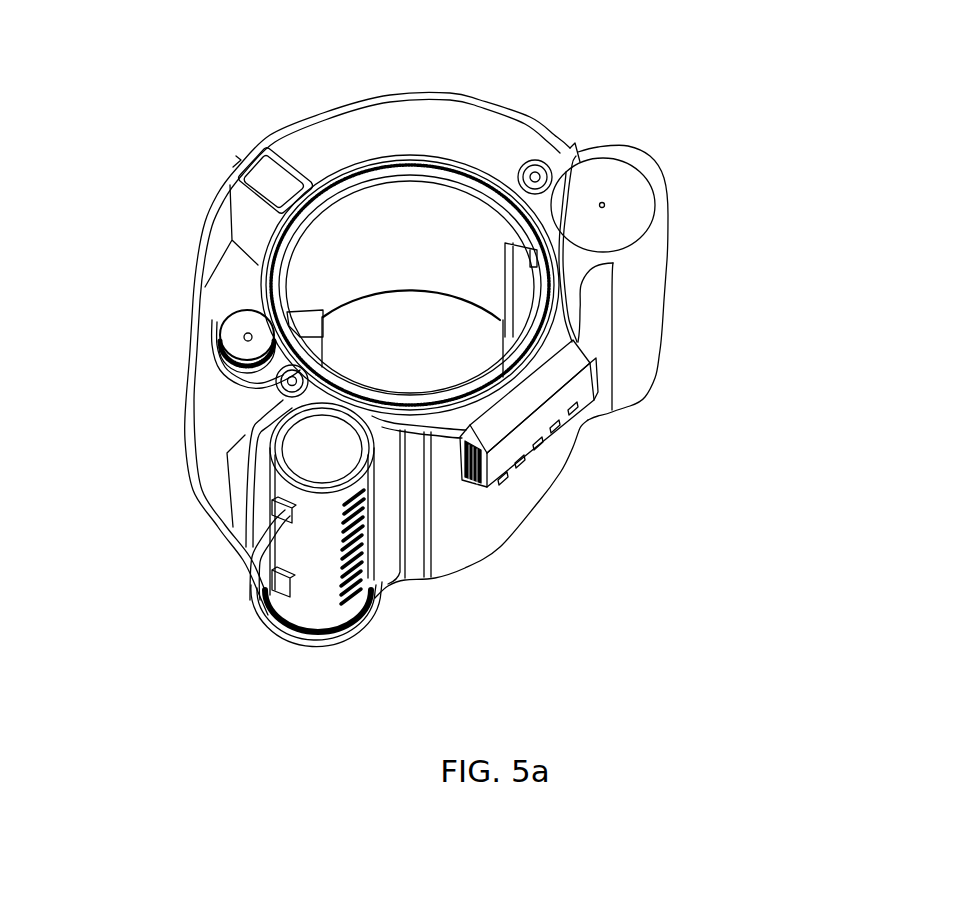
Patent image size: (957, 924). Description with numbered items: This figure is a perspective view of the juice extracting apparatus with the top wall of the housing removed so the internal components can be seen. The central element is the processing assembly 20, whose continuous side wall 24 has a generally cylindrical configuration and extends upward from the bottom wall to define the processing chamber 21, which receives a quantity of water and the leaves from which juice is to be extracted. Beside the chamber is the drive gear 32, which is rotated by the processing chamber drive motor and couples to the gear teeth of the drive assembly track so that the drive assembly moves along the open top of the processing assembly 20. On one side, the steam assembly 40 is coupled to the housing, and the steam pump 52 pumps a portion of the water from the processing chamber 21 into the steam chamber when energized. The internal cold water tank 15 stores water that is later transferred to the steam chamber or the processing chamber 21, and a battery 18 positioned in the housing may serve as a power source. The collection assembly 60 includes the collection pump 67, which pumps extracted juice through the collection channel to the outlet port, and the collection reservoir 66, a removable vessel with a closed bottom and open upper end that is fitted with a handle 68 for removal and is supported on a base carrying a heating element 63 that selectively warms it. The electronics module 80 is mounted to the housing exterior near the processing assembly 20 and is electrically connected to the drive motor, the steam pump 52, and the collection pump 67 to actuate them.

The internal cold water tank 15 is at (494, 120).
The battery 18 is at (260, 174).
The processing assembly 20 is at (502, 581).
The processing chamber 21 is at (458, 254).
The continuous side wall 24 is at (401, 201).
The drive gear 32 is at (233, 328).
The steam assembly 40 is at (657, 135).
The steam pump 52 is at (537, 176).
The collection assembly 60 is at (308, 676).
The heating element 63 is at (356, 622).
The collection reservoir 66 is at (300, 606).
The collection pump 67 is at (277, 389).
The handle 68 is at (248, 570).
The electronics module 80 is at (535, 484).